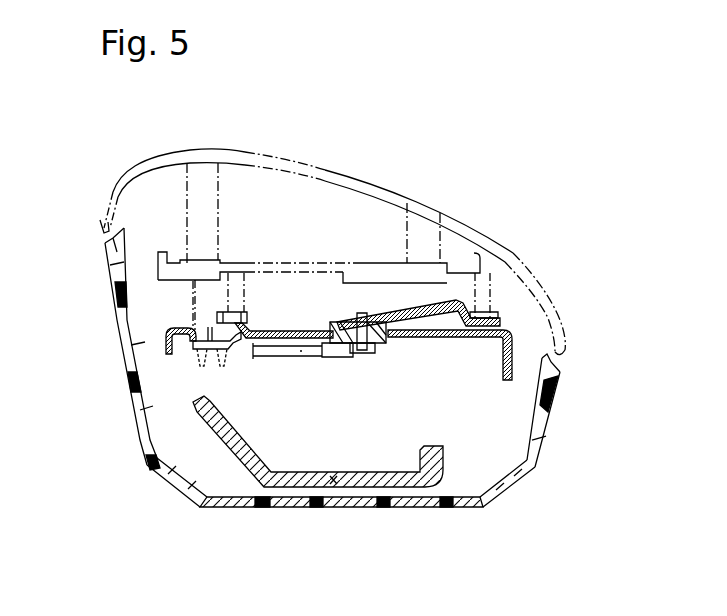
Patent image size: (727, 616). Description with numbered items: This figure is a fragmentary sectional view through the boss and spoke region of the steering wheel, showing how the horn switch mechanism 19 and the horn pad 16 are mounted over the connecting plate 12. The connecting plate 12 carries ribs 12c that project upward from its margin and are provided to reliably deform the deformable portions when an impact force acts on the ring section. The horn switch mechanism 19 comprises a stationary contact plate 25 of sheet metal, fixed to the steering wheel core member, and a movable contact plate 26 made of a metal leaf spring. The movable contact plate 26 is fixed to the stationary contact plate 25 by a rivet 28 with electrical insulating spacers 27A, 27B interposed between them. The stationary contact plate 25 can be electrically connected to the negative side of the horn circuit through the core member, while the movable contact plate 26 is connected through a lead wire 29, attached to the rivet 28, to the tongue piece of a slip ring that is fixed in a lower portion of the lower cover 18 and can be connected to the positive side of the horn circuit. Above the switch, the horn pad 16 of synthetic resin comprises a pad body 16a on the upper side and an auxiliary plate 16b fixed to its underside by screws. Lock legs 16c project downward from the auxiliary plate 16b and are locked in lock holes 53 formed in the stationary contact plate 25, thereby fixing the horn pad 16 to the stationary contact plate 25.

The connecting plate 12 is at (337, 507).
The ribs 12c is at (197, 412).
The horn pad 16 is at (503, 181).
The pad body 16a is at (337, 163).
The auxiliary plate 16b is at (282, 270).
The lock legs 16c is at (207, 312).
The lower cover 18 is at (208, 506).
The horn switch mechanism 19 is at (532, 327).
The stationary contact plate 25 is at (428, 338).
The movable contact plate 26 is at (456, 302).
The electrical insulating spacer 27A is at (322, 323).
The electrical insulating spacer 27B is at (378, 345).
The rivet 28 is at (356, 350).
The lead wire 29 is at (288, 357).
The lock holes 53 is at (170, 345).